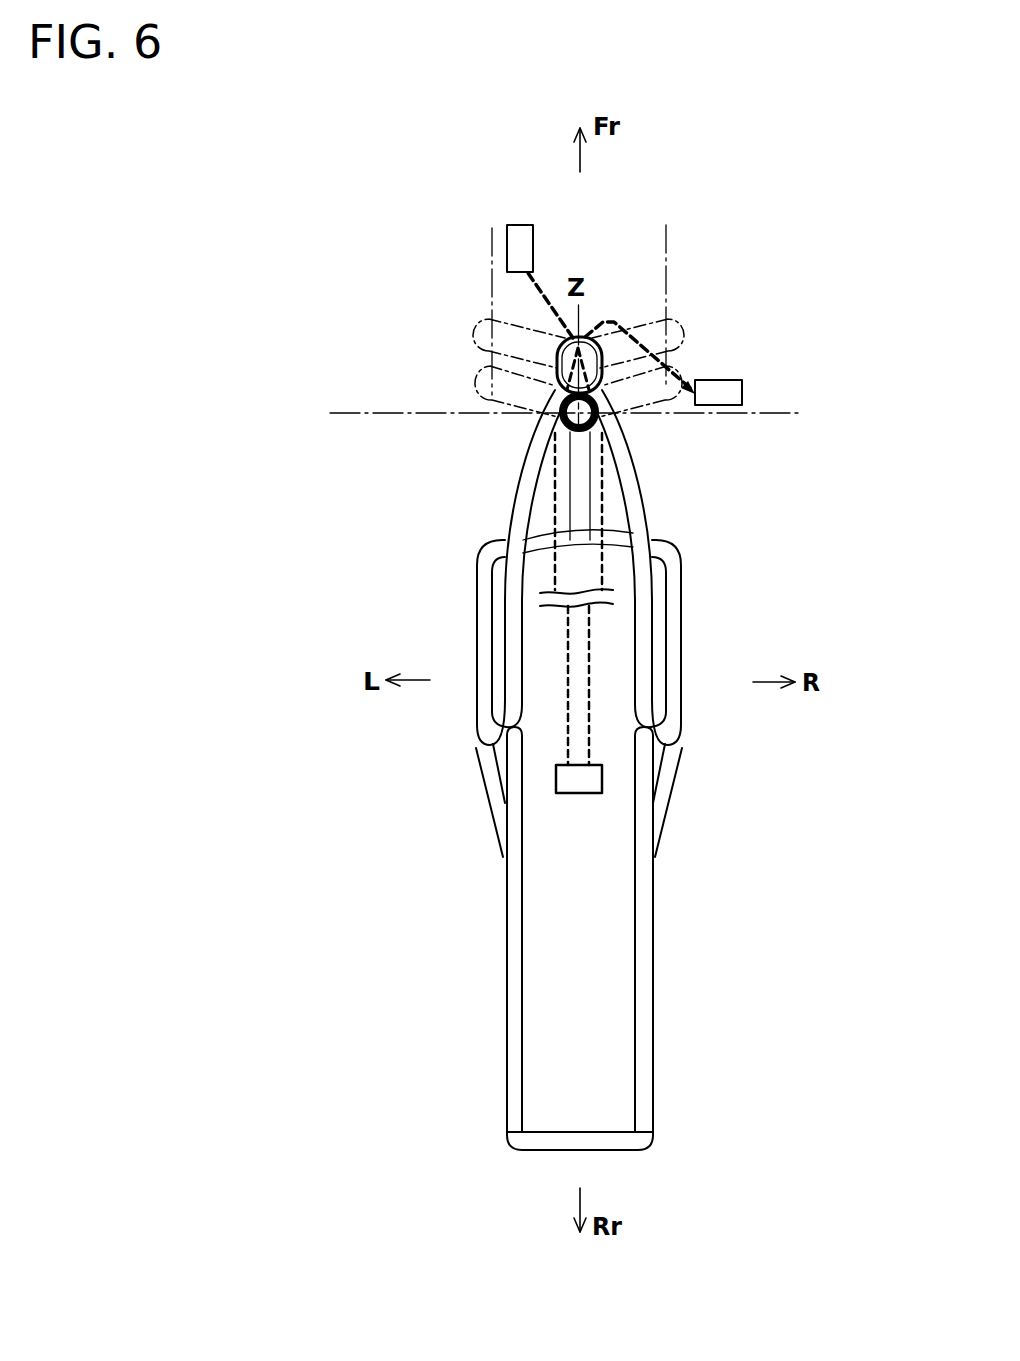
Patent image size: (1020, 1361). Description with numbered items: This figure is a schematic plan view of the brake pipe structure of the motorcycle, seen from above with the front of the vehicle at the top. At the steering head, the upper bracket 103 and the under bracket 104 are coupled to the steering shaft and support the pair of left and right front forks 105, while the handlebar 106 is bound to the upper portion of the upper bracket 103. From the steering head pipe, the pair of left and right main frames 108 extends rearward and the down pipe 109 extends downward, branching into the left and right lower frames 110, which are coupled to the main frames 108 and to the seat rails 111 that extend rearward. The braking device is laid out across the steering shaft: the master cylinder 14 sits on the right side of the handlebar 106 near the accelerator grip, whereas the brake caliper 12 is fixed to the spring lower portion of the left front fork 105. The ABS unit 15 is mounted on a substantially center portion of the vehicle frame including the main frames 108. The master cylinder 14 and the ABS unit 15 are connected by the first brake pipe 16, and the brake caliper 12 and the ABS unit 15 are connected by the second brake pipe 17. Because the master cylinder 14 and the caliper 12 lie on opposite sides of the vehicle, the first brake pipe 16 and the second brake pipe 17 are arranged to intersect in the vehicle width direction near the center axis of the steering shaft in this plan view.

The brake caliper 12 is at (522, 225).
The master cylinder 14 is at (720, 380).
The ABS unit 15 is at (602, 777).
The first brake pipe 16 is at (622, 316).
The second brake pipe 17 is at (538, 287).
The upper bracket 103 is at (474, 381).
The under bracket 104 is at (473, 338).
The front forks 105 is at (492, 241).
The handlebar 106 is at (775, 412).
The main frames 108 is at (655, 598).
The down pipe 109 is at (540, 477).
The lower frames 110 is at (477, 587).
The seat rails 111 is at (653, 967).